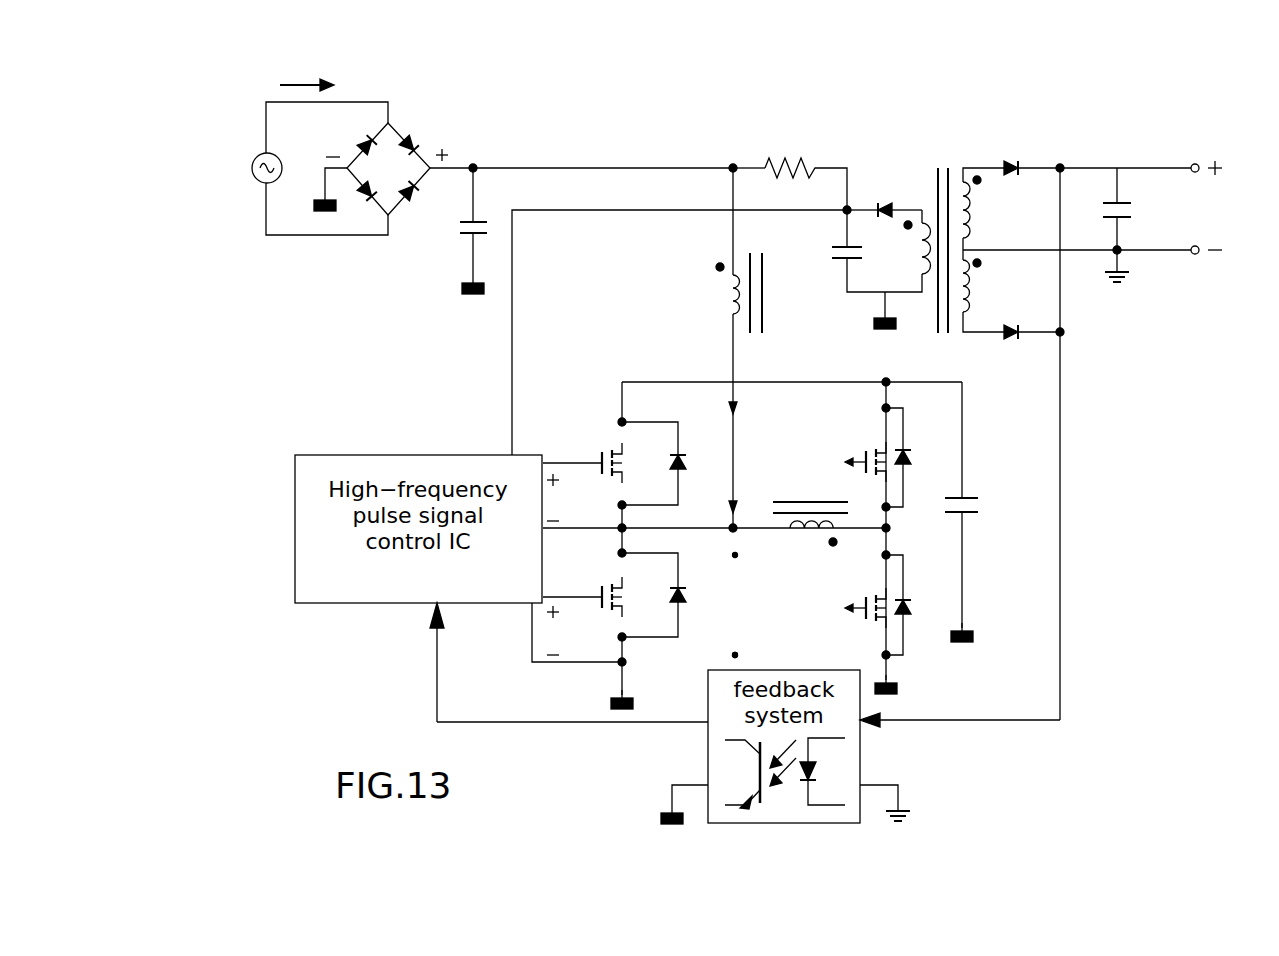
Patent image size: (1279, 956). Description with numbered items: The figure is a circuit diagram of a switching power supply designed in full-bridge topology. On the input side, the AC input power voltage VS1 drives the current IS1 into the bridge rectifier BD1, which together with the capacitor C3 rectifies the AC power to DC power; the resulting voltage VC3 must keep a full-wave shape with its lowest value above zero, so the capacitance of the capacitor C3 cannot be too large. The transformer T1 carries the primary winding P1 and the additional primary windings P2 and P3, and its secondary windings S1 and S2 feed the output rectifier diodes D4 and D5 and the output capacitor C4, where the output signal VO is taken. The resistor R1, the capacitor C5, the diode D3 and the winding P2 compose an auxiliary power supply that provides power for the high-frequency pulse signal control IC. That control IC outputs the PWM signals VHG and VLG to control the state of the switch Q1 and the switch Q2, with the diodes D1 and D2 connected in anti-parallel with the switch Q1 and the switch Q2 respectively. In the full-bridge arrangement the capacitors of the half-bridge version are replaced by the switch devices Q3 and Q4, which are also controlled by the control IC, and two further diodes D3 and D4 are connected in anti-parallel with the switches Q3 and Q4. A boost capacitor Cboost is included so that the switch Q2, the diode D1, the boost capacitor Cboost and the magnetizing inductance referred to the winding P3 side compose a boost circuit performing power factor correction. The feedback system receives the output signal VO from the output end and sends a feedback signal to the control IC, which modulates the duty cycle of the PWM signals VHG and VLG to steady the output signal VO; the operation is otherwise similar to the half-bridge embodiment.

The AC input power voltage VS1 is at (292, 168).
The input current IS1 is at (295, 74).
The bridge rectifier BD1 is at (381, 135).
The voltage across capacitor C3 VC3 is at (581, 146).
The capacitor C3 is at (453, 231).
The resistor R1 is at (788, 165).
The diode D3 is at (893, 336).
The primary winding P2 is at (889, 269).
The capacitor C5 is at (830, 243).
The primary winding P3 is at (708, 413).
The transformer T1 is at (848, 321).
The secondary winding S1 is at (983, 209).
The secondary winding S2 is at (983, 291).
The diode D4 is at (973, 390).
The diode D5 is at (1032, 356).
The capacitor C4 is at (1131, 225).
The output signal VO is at (1100, 207).
The switch Q1 is at (584, 455).
The diode D1 is at (668, 463).
The switch Q2 is at (588, 618).
The diode D2 is at (668, 595).
The PWM signal VHG is at (569, 498).
The PWM signal VLG is at (577, 632).
The switch device Q3 is at (864, 455).
The switch device Q4 is at (867, 611).
The primary winding P1 is at (813, 547).
The boost capacitor Cboost is at (994, 512).